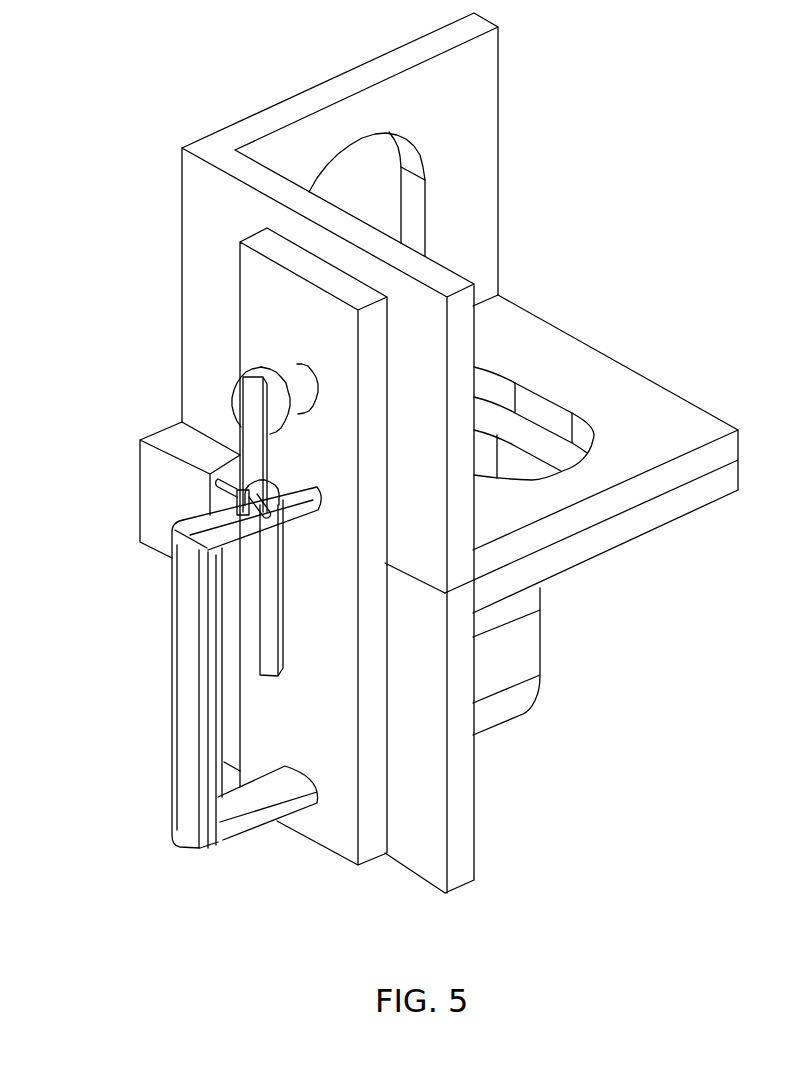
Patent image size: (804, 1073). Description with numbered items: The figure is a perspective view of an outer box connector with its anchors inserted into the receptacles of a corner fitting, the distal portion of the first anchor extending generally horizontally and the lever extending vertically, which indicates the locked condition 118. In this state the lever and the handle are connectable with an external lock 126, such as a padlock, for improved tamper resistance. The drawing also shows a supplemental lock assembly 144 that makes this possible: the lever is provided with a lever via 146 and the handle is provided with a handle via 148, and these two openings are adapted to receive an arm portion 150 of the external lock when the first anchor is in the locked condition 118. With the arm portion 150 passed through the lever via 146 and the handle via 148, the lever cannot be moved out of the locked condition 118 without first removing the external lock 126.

The locked condition 118 is at (84, 445).
The external lock 126 is at (141, 535).
The supplemental lock assembly 144 is at (122, 404).
The lever via 146 is at (286, 481).
The handle via 148 is at (232, 501).
The arm portion 150 is at (256, 560).